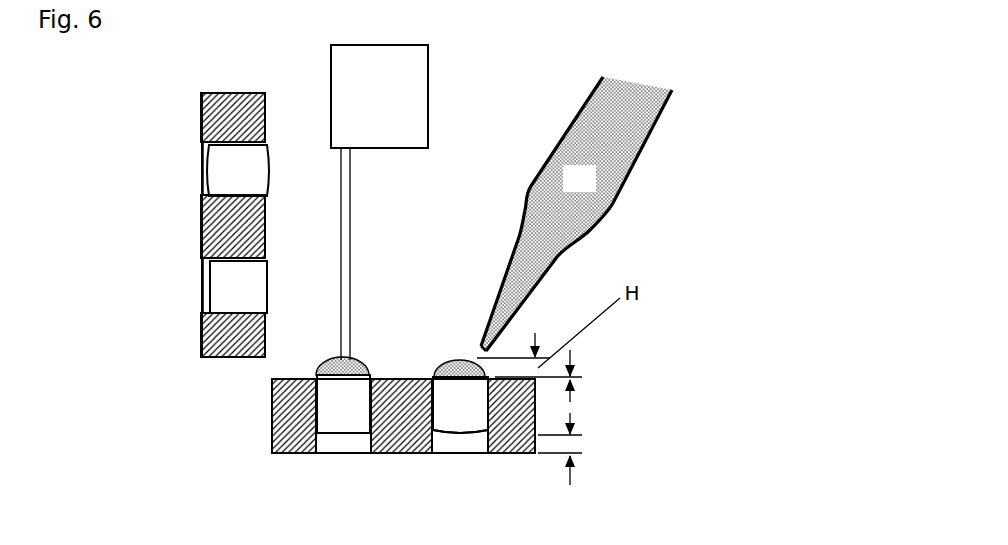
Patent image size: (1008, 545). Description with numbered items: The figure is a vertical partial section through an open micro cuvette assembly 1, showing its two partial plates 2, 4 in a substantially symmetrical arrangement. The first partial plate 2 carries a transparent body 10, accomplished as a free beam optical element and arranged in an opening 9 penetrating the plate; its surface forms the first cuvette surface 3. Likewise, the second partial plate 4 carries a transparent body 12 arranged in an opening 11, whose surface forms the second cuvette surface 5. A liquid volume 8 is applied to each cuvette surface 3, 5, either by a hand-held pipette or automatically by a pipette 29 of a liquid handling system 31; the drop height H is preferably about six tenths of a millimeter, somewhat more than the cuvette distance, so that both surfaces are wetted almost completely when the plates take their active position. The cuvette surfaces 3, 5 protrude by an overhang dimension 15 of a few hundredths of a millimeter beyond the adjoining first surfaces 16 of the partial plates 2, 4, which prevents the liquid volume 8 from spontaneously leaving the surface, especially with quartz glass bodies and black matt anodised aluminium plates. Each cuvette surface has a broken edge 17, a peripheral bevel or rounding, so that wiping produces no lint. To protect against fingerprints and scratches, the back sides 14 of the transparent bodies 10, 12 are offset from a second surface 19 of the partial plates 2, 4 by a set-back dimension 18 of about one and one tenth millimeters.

The micro cuvette assembly 1 is at (714, 88).
The first partial plate 2 is at (218, 224).
The first cuvette surface 3 is at (270, 171).
The second partial plate 4 is at (403, 421).
The second cuvette surface 5 is at (346, 383).
The liquid volume 8 is at (337, 358).
The opening 9 is at (203, 148).
The transparent body 10 is at (235, 167).
The opening 11 is at (342, 447).
The transparent body 12 is at (356, 416).
The back side 14 is at (208, 168).
The overhang dimension 15 is at (580, 378).
The first surface 16 is at (266, 109).
The broken edge 17 is at (268, 146).
The set-back dimension 18 is at (572, 443).
The second surface 19 is at (200, 339).
The pipette 29 is at (346, 263).
The liquid handling system 31 is at (361, 84).